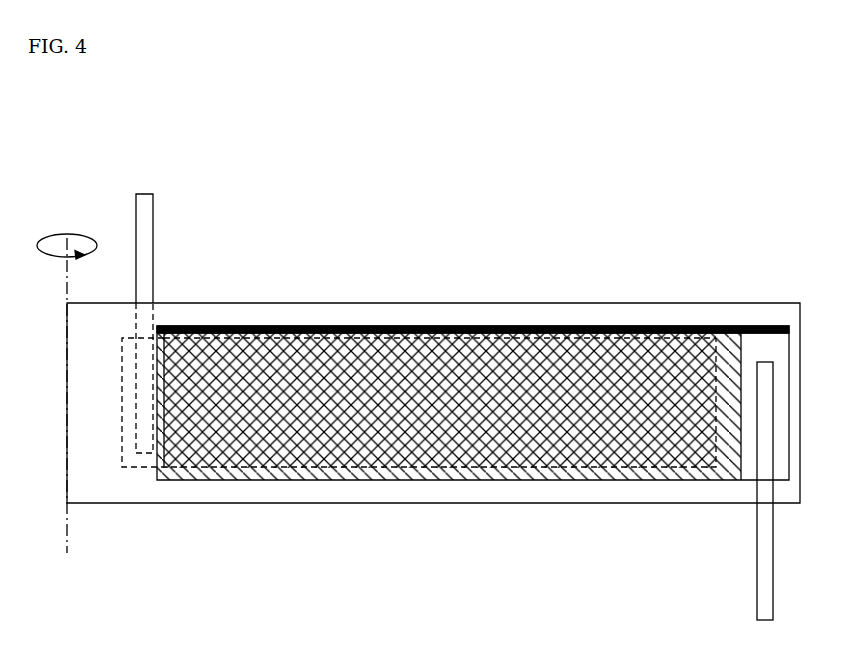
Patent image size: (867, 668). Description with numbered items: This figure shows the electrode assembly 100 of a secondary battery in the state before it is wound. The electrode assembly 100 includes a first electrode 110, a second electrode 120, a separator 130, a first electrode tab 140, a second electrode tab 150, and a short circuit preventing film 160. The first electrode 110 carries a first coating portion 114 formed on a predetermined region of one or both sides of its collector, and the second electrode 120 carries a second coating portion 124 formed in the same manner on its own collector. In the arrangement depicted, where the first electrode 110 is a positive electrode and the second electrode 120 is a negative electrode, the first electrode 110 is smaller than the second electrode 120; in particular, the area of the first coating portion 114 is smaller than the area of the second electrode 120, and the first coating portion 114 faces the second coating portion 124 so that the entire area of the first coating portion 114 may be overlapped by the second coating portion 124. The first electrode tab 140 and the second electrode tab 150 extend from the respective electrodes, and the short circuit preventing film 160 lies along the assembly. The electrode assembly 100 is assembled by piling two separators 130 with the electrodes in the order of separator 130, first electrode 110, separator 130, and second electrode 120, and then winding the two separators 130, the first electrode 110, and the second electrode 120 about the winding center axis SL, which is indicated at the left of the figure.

The electrode assembly 100 is at (112, 133).
The winding center axis SL is at (54, 235).
The first electrode 110 is at (143, 467).
The first coating portion 114 is at (379, 363).
The second electrode 120 is at (550, 480).
The second coating portion 124 is at (461, 378).
The separator 130 is at (260, 303).
The first electrode tab 140 is at (145, 225).
The second electrode tab 150 is at (757, 566).
The short circuit preventing film 160 is at (574, 327).